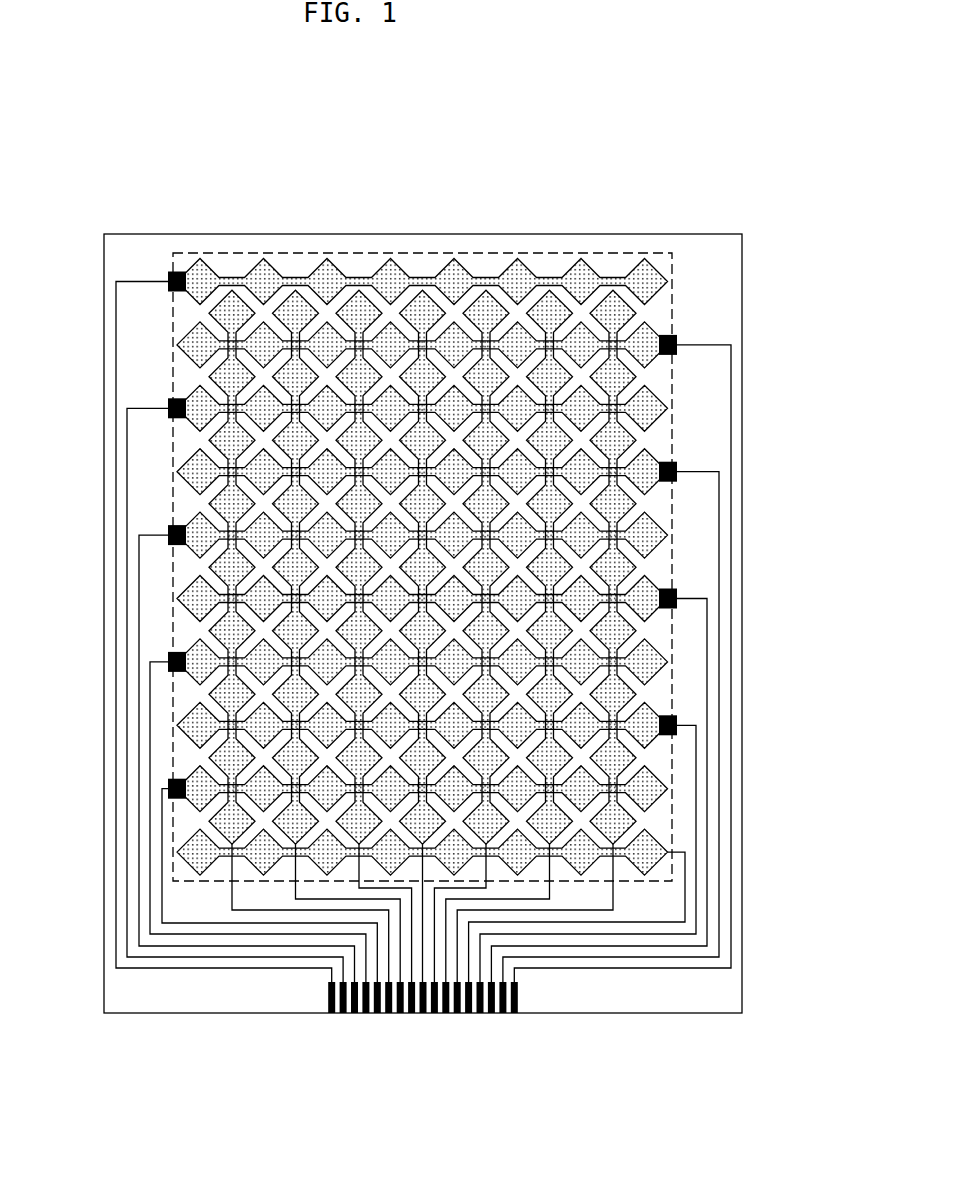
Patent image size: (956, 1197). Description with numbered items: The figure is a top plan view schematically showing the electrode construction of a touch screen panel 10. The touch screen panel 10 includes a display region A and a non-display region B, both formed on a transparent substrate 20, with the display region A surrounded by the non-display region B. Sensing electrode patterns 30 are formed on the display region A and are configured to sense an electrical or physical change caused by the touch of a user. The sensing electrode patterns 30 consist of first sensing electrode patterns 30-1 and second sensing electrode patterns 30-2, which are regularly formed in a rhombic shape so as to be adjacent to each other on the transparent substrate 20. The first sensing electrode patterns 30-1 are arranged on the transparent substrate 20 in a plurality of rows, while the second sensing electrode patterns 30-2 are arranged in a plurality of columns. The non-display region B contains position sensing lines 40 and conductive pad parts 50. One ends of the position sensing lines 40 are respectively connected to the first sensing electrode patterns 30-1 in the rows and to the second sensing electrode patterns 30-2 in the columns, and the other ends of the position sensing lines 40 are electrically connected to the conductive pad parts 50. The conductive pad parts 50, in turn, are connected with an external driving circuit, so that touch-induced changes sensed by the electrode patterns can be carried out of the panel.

The touch screen panel 10 is at (68, 91).
The transparent substrate 20 is at (202, 234).
The sensing electrode patterns 30 is at (515, 156).
The first sensing electrode patterns 30-1 is at (395, 258).
The second sensing electrode patterns 30-2 is at (487, 296).
The position sensing lines 40 is at (115, 712).
The conductive pad parts 50 is at (673, 720).
The display region A is at (280, 252).
The non-display region B is at (707, 252).